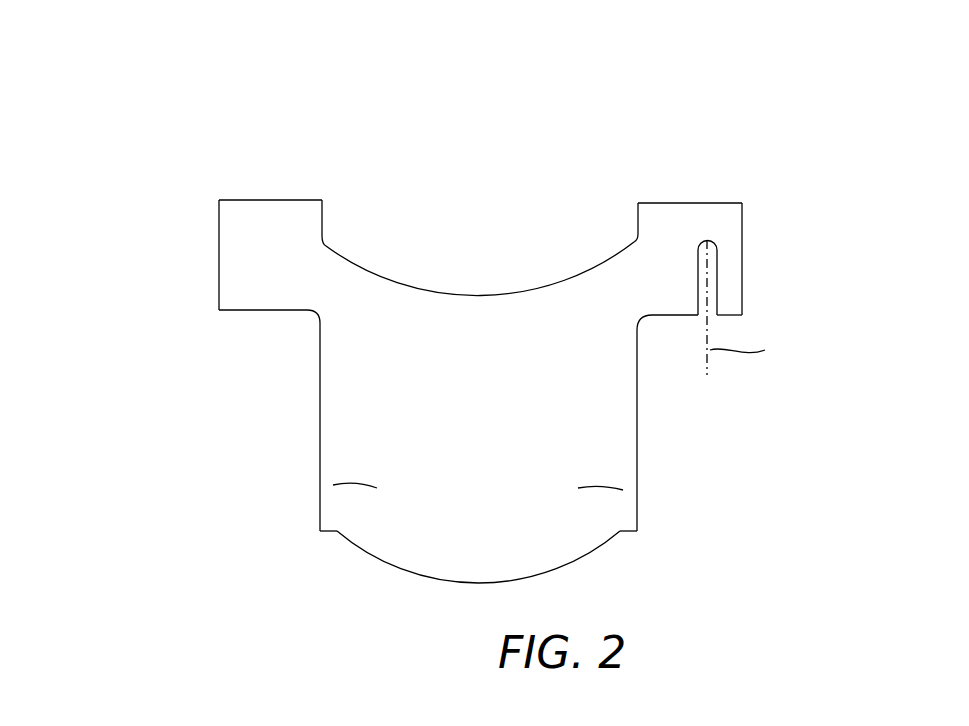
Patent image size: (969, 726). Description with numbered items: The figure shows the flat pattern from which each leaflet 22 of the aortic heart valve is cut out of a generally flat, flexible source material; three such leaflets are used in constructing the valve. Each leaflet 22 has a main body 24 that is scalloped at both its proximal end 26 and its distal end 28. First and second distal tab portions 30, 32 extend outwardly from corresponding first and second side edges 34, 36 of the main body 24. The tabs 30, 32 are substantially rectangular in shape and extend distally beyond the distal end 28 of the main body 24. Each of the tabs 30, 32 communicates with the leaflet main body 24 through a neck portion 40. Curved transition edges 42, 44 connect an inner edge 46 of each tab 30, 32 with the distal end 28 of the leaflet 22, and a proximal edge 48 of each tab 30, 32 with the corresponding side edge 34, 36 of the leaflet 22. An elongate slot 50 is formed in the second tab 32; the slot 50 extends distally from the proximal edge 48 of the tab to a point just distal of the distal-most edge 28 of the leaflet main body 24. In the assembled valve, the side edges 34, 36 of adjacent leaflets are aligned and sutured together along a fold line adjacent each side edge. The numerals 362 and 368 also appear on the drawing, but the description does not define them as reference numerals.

The leaflet 22 is at (371, 128).
The main body 24 is at (434, 494).
The proximal end 26 is at (447, 583).
The distal end 28 is at (435, 288).
The first distal tab portion 30 is at (488, 243).
The second distal tab portion 32 is at (784, 227).
The first side edge 34 is at (320, 423).
The second side edge 36 is at (637, 432).
The neck portion 40 is at (304, 282).
The curved transition edge 42 is at (336, 235).
The curved transition edge 44 is at (302, 322).
The inner edge 46 is at (322, 215).
The proximal edge 48 is at (237, 312).
The elongate slot 50 is at (717, 280).
The outer tab edge 362 is at (219, 253).
The lower step 368 is at (318, 508).